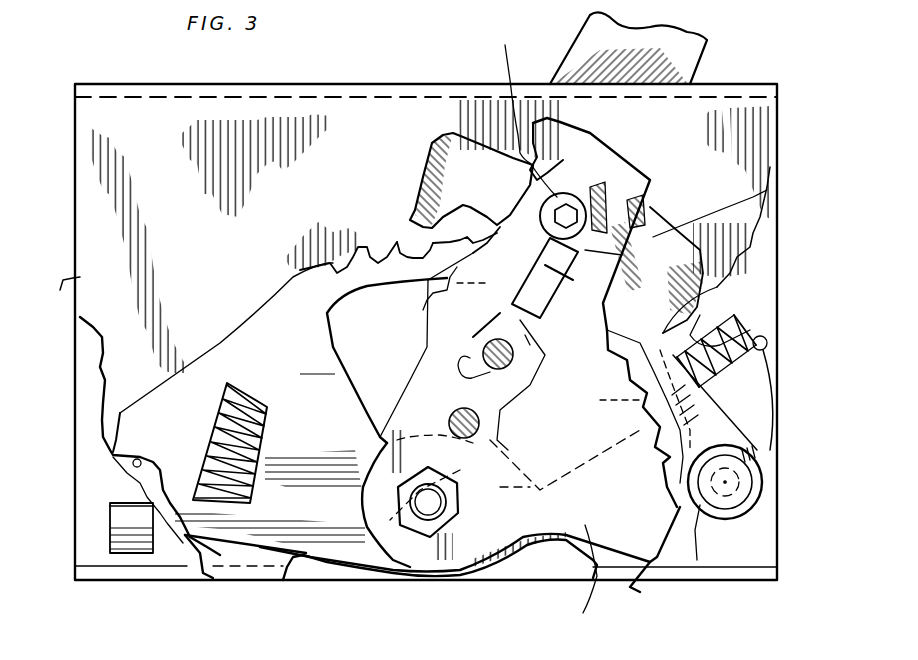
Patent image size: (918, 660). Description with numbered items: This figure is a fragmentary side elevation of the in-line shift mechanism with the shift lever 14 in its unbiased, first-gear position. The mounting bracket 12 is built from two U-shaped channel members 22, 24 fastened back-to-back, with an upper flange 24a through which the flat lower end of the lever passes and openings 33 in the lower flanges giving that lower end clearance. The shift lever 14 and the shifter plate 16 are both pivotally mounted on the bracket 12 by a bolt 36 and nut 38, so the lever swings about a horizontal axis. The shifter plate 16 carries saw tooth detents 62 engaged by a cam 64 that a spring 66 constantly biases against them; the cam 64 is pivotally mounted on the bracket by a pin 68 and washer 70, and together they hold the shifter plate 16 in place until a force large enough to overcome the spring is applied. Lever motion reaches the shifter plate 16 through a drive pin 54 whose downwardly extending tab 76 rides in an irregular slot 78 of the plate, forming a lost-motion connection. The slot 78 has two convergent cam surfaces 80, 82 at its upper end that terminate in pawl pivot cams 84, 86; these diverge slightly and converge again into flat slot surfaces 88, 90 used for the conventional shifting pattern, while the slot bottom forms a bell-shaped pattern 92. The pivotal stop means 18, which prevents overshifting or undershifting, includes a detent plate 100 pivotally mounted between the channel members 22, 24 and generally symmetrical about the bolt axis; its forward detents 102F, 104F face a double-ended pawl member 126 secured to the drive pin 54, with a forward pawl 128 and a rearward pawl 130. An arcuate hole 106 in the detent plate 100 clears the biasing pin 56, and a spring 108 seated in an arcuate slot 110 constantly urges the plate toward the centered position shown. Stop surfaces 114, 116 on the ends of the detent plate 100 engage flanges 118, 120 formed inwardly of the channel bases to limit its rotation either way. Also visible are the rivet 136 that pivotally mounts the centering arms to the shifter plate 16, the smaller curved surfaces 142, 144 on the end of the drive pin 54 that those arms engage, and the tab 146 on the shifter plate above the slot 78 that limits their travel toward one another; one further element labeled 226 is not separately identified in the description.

The mounting bracket 12 is at (75, 132).
The shift lever 14 is at (672, 55).
The shifter plate 16 is at (455, 527).
The pivotal stop means 18 is at (592, 132).
The U-shaped channel member 22 is at (758, 265).
The U-shaped channel member 24 is at (767, 190).
The upper flange 24a is at (777, 92).
The openings 33 is at (330, 560).
The bolt 36 is at (440, 520).
The nut 38 is at (430, 512).
The drive pin 54 is at (590, 205).
The biasing pin 56 is at (497, 440).
The saw tooth detents 62 is at (642, 427).
The cam 64 is at (720, 417).
The spring 66 is at (766, 347).
The pin 68 is at (740, 502).
The washer 70 is at (762, 464).
The tab 76 is at (685, 205).
The irregular slot 78 is at (515, 350).
The convergent cam surface 80 is at (540, 215).
The convergent cam surface 82 is at (622, 255).
The pawl pivot cam 84 is at (500, 233).
The pawl pivot cam 86 is at (632, 280).
The flat slot surface 88 is at (490, 323).
The flat slot surface 90 is at (520, 348).
The bell-shaped pattern 92 is at (473, 362).
The detent plate 100 is at (277, 308).
The detent 102F is at (405, 240).
The detent 104F is at (365, 247).
The arcuate segment or hole 106 is at (345, 343).
The spring 108 is at (267, 415).
The arcuate slot 110 is at (253, 450).
The stop surface 114 is at (141, 460).
The stop surface 116 is at (632, 573).
The flange 118 is at (123, 490).
The flange 120 is at (697, 565).
The double-ended pawl member 126 is at (653, 237).
The pawl 128 is at (423, 190).
The pawl 130 is at (700, 315).
The rivet 136 is at (480, 450).
The curved surface 142 is at (507, 70).
The curved surface 144 is at (645, 195).
The tab 146 is at (608, 180).
The bottom wall 226 is at (760, 576).